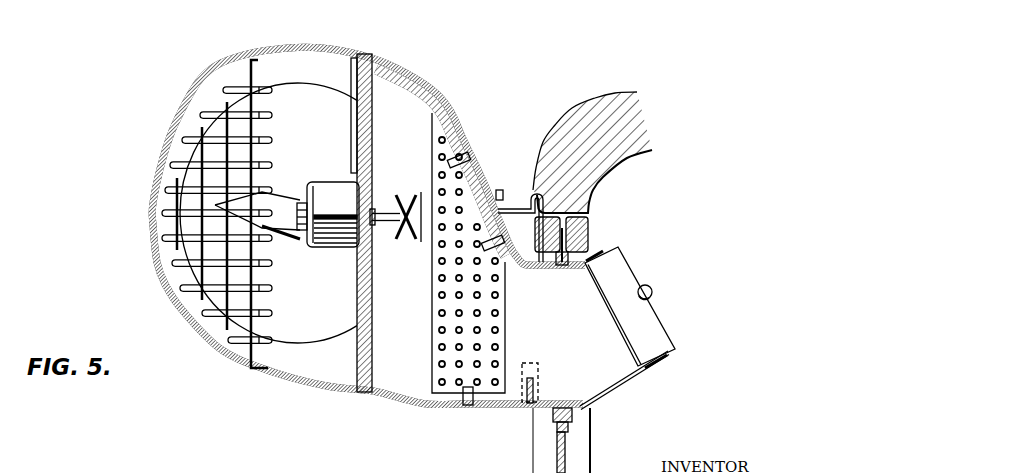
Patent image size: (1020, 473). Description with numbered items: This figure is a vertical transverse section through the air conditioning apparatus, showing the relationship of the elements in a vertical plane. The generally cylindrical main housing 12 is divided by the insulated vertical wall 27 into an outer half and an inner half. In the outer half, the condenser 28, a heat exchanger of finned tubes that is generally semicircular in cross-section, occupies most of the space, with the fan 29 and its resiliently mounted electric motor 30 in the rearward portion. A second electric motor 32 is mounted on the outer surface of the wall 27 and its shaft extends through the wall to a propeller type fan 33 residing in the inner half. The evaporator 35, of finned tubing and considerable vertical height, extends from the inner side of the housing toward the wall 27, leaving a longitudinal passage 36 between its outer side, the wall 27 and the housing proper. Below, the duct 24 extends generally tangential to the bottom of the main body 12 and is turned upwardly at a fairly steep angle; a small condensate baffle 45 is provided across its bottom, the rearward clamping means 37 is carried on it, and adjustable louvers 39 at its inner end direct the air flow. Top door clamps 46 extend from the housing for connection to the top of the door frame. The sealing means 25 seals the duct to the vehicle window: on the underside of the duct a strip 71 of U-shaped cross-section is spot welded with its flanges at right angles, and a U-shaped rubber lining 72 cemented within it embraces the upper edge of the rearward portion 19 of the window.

The main housing 12 is at (183, 110).
The rearward portion of the window 19 is at (567, 457).
The duct 24 is at (619, 373).
The sealing means 25 is at (566, 256).
The vertical wall 27 is at (357, 108).
The condenser 28 is at (170, 263).
The fan 29 is at (293, 202).
The electric motor 30 is at (280, 236).
The electric motor 32 is at (330, 190).
The propeller type fan 33 is at (404, 240).
The evaporator 35 is at (440, 347).
The longitudinal passage 36 is at (414, 310).
The rearward clamping means 37 is at (537, 364).
The louvers 39 is at (619, 273).
The condensate baffle 45 is at (538, 391).
The top door clamps 46 is at (512, 207).
The strip of U-shaped cross-section 71 is at (553, 413).
The U-shaped rubber lining 72 is at (557, 425).